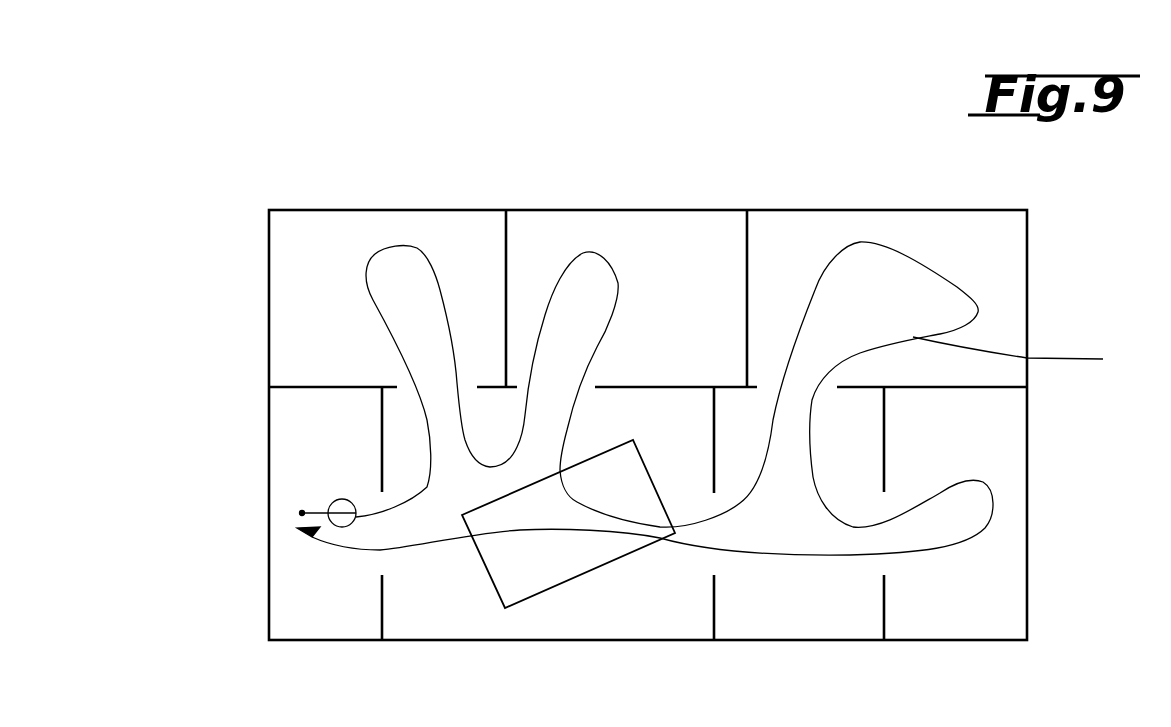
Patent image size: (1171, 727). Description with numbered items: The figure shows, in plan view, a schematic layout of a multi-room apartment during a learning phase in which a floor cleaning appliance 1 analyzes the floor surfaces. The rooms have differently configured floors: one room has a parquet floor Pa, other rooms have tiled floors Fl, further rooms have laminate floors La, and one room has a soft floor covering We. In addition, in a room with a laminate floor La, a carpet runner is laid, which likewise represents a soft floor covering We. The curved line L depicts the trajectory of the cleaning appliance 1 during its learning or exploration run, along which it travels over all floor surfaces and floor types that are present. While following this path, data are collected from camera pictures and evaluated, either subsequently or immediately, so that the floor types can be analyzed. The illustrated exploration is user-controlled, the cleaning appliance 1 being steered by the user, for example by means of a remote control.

The cleaning appliance 1 is at (333, 503).
The curved line L is at (710, 398).
The parquet floor Pa is at (387, 298).
The tiled floors Fl is at (508, 425).
The laminate floors La is at (704, 425).
The soft floor covering We is at (672, 513).